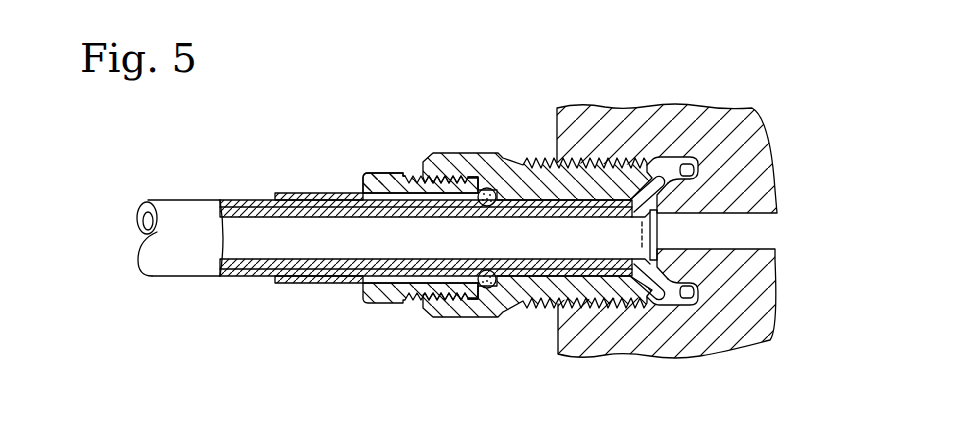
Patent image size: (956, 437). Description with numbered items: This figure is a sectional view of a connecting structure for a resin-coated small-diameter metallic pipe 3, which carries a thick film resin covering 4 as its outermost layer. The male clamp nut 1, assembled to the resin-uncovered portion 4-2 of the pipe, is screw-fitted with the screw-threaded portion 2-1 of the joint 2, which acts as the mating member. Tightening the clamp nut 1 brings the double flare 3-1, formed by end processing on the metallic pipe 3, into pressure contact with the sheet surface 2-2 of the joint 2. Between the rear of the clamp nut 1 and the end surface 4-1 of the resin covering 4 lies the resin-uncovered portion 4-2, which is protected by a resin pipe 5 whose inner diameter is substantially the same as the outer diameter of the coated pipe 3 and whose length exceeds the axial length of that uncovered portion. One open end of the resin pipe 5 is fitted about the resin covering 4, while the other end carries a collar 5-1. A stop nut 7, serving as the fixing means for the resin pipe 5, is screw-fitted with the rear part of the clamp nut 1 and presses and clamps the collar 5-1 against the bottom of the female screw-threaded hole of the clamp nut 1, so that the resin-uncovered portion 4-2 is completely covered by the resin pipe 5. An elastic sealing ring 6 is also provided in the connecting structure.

The clamp nut 1 is at (503, 153).
The joint 2 is at (660, 118).
The screw-threaded portion 2-1 is at (673, 157).
The sheet surface 2-2 is at (686, 174).
The resin-coated small-diameter metallic pipe 3 is at (180, 200).
The double flare 3-1 is at (672, 284).
The thick film resin covering 4 is at (253, 200).
The end surface of the resin-coated layer 4-1 is at (352, 283).
The resin-uncovered portion 4-2 is at (396, 198).
The resin pipe 5 is at (310, 193).
The collar 5-1 is at (484, 189).
The elastic sealing ring 6 is at (484, 290).
The stop nut 7 is at (372, 173).